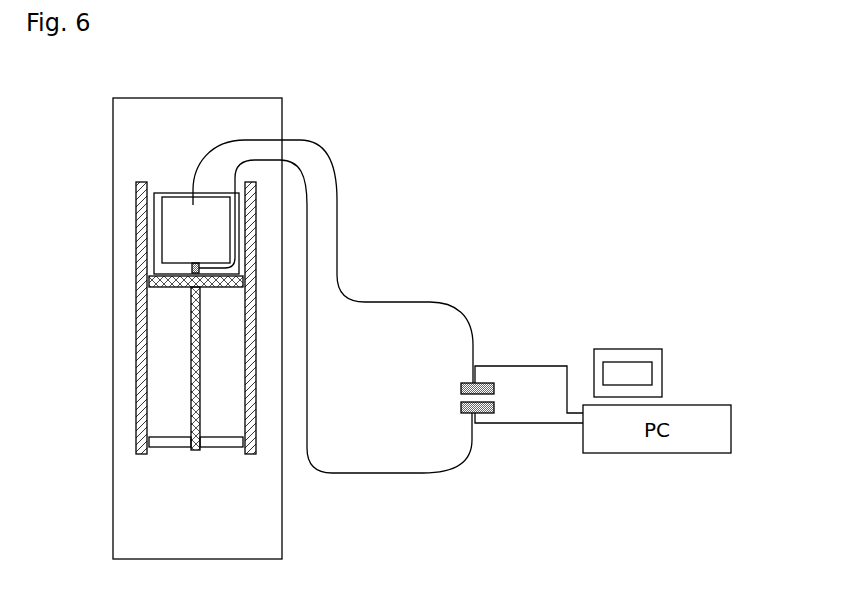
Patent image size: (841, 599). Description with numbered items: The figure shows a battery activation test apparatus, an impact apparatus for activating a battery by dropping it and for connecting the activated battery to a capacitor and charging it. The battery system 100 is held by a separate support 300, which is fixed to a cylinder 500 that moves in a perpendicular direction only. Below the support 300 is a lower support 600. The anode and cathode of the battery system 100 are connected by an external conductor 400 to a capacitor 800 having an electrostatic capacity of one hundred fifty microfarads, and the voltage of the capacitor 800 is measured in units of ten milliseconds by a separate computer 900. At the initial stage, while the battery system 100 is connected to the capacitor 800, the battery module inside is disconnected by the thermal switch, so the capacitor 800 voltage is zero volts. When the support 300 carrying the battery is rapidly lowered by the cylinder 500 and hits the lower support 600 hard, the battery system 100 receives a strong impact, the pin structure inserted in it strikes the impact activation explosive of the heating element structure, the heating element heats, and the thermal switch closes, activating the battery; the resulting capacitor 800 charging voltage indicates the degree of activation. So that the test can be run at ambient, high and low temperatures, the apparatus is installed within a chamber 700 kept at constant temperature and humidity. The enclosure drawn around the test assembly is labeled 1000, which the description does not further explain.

The battery system 100 is at (172, 214).
The support 300 is at (158, 242).
The conductor 400 is at (233, 140).
The cylinder 500 is at (197, 352).
The lower support 600 is at (155, 441).
The chamber 700 is at (142, 405).
The capacitor 800 is at (486, 384).
The computer 900 is at (637, 353).
The test chamber 1000 is at (123, 517).